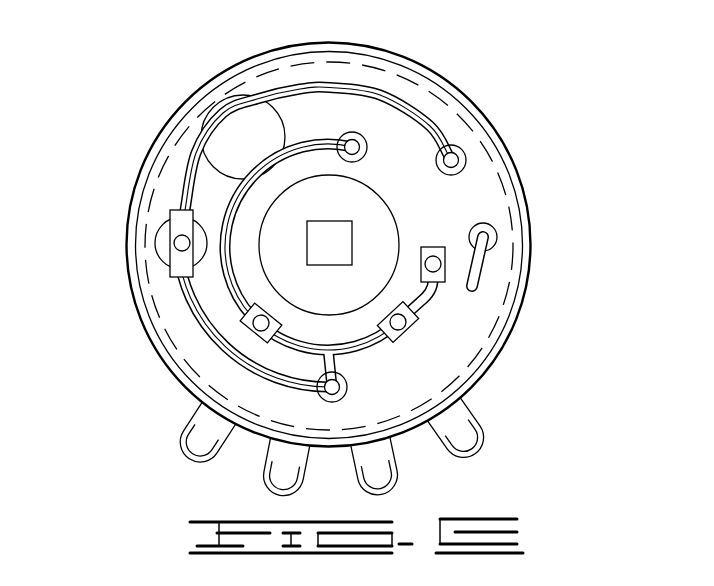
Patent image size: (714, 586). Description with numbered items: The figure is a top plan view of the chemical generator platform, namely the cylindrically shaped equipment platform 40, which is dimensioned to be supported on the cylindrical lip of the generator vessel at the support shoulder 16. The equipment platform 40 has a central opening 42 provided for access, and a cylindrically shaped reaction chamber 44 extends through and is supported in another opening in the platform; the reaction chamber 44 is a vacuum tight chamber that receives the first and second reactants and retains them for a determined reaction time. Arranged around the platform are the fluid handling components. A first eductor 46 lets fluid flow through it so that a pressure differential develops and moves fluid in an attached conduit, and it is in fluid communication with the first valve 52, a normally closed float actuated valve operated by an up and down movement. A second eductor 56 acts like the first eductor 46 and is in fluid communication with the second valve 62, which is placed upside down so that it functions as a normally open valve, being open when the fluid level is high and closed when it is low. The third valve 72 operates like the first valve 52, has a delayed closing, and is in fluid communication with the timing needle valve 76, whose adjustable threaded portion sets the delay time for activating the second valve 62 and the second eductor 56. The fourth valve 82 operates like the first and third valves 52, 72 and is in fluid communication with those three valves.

The support shoulder 16 is at (412, 61).
The equipment platform 40 is at (178, 324).
The central opening 42 is at (369, 228).
The reaction chamber 44 is at (242, 133).
The first eductor 46 is at (352, 132).
The first valve 52 is at (258, 337).
The second eductor 56 is at (462, 151).
The second valve 62 is at (156, 245).
The third valve 72 is at (406, 335).
The timing needle valve 76 is at (497, 236).
The fourth valve 82 is at (478, 283).